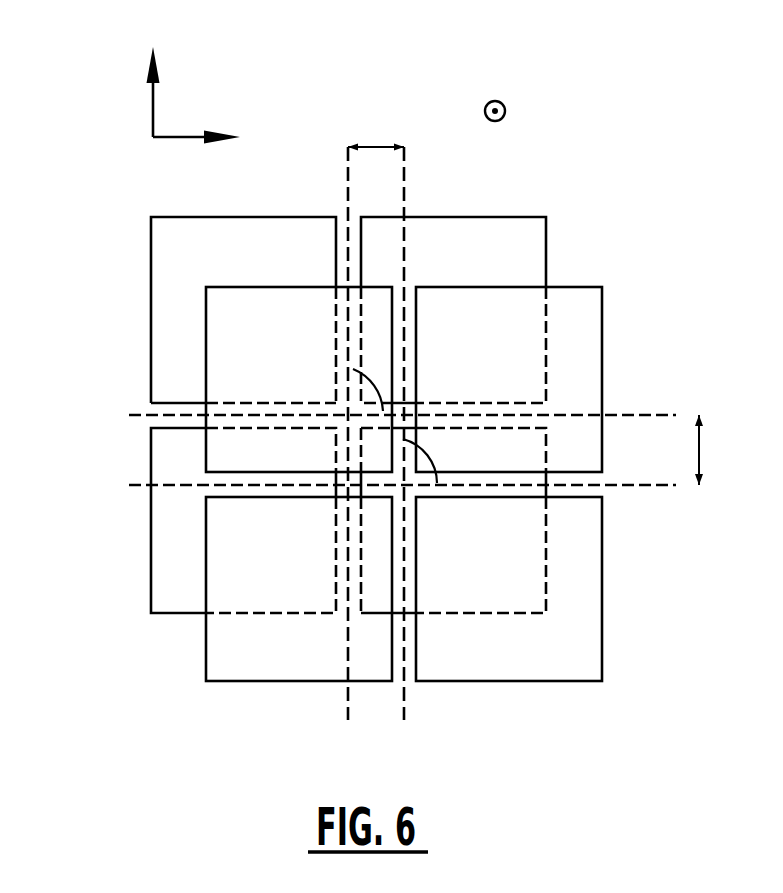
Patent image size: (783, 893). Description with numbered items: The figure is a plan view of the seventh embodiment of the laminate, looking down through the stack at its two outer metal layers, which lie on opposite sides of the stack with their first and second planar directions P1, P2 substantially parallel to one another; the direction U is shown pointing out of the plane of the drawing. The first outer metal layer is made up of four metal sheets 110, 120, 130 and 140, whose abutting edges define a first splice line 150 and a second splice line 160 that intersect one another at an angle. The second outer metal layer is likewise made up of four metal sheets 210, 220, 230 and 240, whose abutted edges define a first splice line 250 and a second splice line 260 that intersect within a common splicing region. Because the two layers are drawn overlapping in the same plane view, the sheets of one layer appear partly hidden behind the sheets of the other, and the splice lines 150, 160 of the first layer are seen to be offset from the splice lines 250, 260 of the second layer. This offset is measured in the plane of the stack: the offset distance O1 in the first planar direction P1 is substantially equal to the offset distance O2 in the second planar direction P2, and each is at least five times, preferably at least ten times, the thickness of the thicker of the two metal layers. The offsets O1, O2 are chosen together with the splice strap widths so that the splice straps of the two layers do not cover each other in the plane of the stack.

The metal sheet 110 is at (233, 307).
The metal sheet 120 is at (573, 305).
The metal sheet 130 is at (268, 665).
The metal sheet 140 is at (537, 668).
The first splice line 150 is at (677, 485).
The second splice line 160 is at (405, 182).
The metal sheet 210 is at (203, 235).
The metal sheet 220 is at (513, 228).
The metal sheet 230 is at (177, 598).
The metal sheet 240 is at (452, 603).
The first splice line 250 is at (673, 413).
The second splice line 260 is at (347, 178).
The offset distance in the first planar direction O1 is at (383, 143).
The offset distance in the second planar direction O2 is at (700, 443).
The first planar direction P1 is at (198, 158).
The second planar direction P2 is at (132, 92).
The direction perpendicular to plane U is at (505, 111).